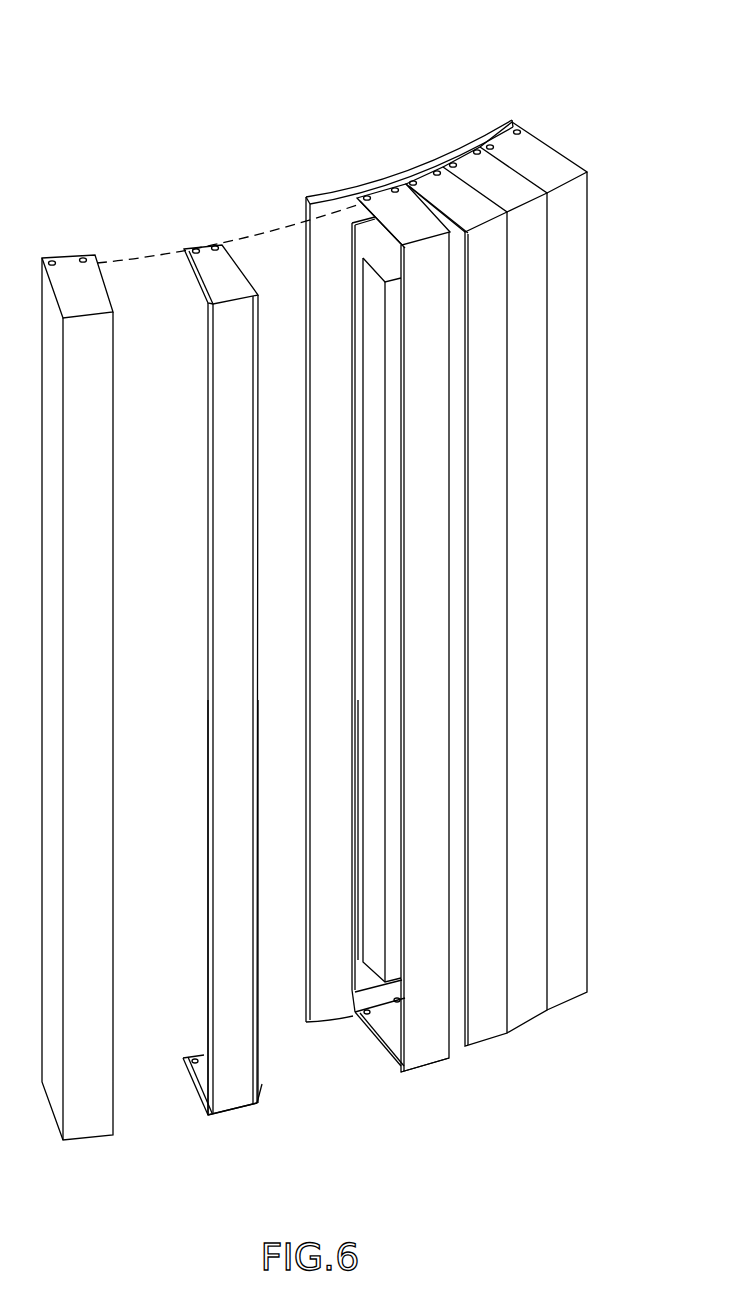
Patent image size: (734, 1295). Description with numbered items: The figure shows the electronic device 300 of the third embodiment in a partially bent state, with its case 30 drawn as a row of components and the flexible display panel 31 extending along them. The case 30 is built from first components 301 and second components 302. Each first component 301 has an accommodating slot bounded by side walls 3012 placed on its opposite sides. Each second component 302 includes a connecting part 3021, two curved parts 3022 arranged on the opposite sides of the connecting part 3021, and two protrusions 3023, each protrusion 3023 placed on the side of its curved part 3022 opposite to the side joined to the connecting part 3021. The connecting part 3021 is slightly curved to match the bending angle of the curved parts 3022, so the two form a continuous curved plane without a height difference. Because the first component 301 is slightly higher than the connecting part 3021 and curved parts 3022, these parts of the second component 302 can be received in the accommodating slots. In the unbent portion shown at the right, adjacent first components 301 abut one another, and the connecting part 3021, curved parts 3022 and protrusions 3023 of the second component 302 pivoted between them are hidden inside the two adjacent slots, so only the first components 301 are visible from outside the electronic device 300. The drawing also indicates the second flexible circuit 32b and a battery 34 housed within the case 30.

The electronic device 300 is at (646, 92).
The case 30 is at (63, 203).
The flexible display panel 31 is at (325, 197).
The first component 301 is at (73, 277).
The second component 302 is at (203, 260).
The connecting part 3021 is at (235, 1104).
The curved part 3022 is at (218, 1117).
The protrusion 3023 is at (197, 1090).
The side wall 3012 is at (396, 1068).
The second flexible circuit 32b is at (357, 945).
The battery 34 is at (402, 958).